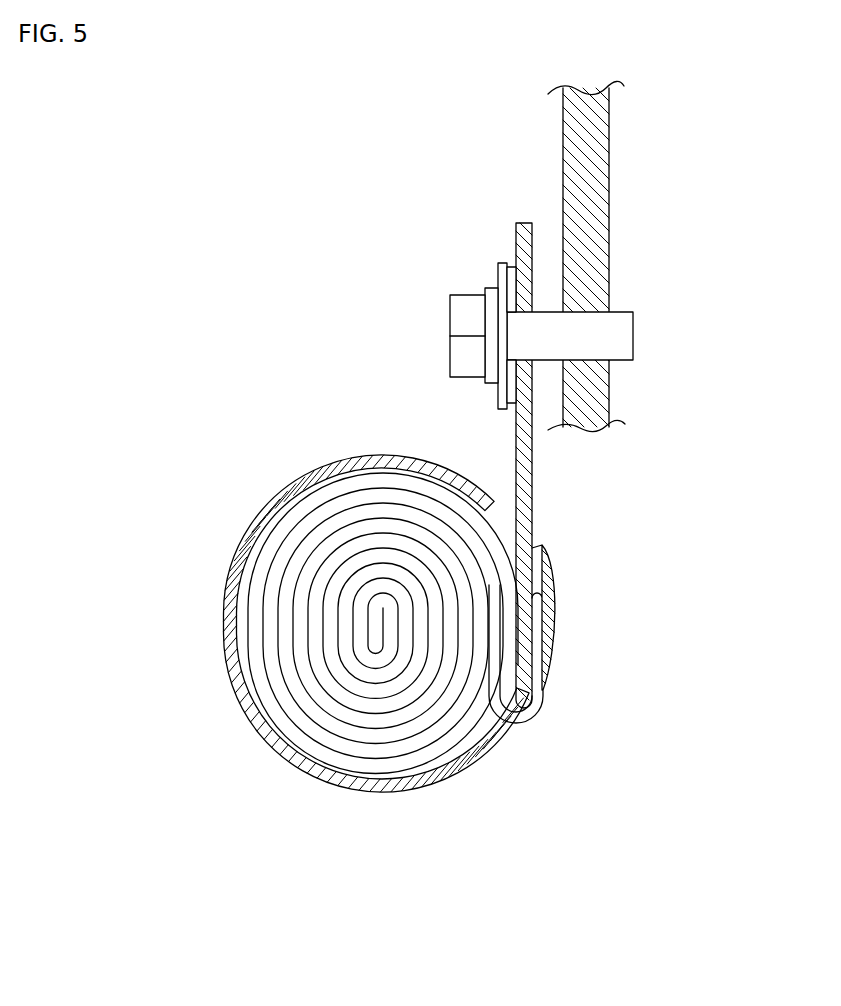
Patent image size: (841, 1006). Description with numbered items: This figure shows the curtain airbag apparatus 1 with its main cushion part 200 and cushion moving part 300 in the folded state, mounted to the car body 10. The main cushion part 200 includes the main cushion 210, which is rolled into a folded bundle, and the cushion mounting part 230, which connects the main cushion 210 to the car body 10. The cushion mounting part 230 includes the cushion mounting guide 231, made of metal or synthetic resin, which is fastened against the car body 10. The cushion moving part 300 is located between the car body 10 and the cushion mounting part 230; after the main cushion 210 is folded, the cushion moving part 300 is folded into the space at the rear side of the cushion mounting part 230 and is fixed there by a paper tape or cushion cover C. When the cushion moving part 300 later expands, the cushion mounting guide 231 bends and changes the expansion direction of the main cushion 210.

The curtain airbag apparatus 1 is at (355, 273).
The car body 10 is at (609, 186).
The main cushion part 200 is at (317, 363).
The main cushion 210 is at (315, 545).
The cushion mounting part 230 is at (494, 465).
The cushion mounting guide 231 is at (607, 465).
The cushion moving part 300 is at (549, 624).
The cushion cover C is at (310, 772).